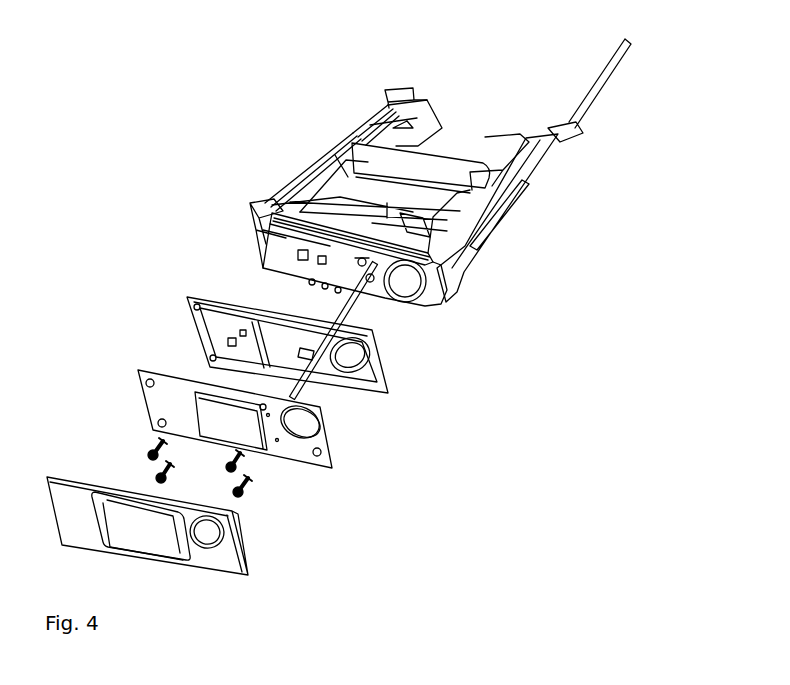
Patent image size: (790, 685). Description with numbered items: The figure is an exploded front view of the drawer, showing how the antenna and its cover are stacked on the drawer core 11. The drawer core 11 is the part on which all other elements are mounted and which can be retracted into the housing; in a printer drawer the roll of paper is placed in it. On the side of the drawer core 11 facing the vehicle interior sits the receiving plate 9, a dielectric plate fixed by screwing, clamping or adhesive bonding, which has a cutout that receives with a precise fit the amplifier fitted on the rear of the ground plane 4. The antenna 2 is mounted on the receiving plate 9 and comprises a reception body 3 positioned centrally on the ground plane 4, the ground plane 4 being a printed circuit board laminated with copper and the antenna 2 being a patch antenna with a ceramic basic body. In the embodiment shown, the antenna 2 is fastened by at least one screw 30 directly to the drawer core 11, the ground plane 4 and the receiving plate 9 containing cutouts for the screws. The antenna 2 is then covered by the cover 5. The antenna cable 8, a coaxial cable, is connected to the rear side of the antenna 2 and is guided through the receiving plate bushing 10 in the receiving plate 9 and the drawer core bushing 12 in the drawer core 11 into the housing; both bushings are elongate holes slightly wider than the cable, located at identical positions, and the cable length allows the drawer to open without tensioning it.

The antenna 2 is at (323, 428).
The reception body 3 is at (250, 445).
The ground plane 4 is at (328, 453).
The cover 5 is at (243, 555).
The antenna cable 8 is at (362, 308).
The receiving plate 9 is at (380, 365).
The receiving plate bushing 10 is at (300, 353).
The drawer core 11 is at (467, 262).
The drawer core bushing 12 is at (360, 279).
The screw 30 is at (235, 485).